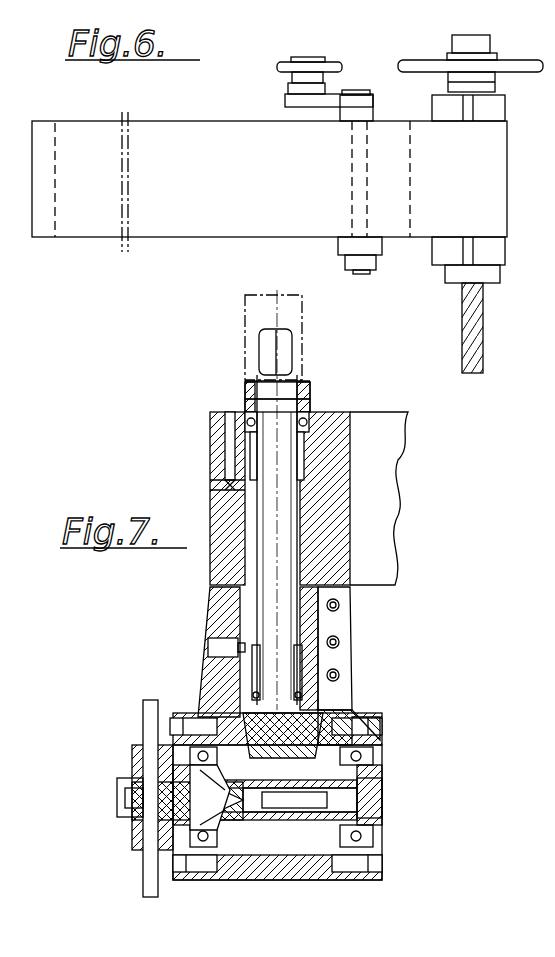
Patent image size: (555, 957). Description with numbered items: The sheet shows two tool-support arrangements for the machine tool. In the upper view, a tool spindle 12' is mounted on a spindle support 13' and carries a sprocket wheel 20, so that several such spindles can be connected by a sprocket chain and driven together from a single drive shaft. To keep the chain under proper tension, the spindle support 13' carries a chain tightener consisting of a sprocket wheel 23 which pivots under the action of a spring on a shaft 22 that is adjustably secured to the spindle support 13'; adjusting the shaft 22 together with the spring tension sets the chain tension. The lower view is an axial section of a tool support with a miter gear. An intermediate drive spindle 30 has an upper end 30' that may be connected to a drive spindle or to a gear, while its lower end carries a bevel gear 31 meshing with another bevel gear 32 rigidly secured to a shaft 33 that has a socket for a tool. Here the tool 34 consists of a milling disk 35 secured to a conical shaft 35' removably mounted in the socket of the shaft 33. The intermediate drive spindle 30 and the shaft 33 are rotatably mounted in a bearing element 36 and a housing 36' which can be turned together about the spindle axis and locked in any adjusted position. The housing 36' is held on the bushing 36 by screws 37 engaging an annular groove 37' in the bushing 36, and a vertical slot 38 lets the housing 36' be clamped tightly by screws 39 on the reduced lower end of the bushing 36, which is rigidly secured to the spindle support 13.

In FIG. 6, the tool spindle 12' is at (474, 187).
In FIG. 6, the spindle support 13' is at (269, 169).
In FIG. 7, the spindle support 13 is at (379, 481).
In FIG. 6, the sprocket wheel 20 is at (418, 66).
In FIG. 6, the shaft 22 is at (355, 173).
In FIG. 6, the sprocket wheel 23 is at (303, 64).
In FIG. 7, the intermediate drive spindle 30 is at (316, 500).
In FIG. 7, the upper end of intermediate drive spindle 30' is at (295, 353).
In FIG. 7, the bevel gear 31 is at (293, 740).
In FIG. 7, the bevel gear 32 is at (225, 880).
In FIG. 7, the shaft 33 is at (315, 880).
In FIG. 7, the tool 34 is at (135, 848).
In FIG. 7, the milling disk 35 is at (138, 802).
In FIG. 7, the conical shaft 35' is at (200, 840).
In FIG. 7, the bearing element 36 is at (258, 498).
In FIG. 7, the housing 36' is at (271, 751).
In FIG. 7, the screws 37 is at (200, 636).
In FIG. 7, the annular groove 37' is at (321, 621).
In FIG. 7, the vertical slot 38 is at (340, 645).
In FIG. 7, the screws 39 is at (340, 674).